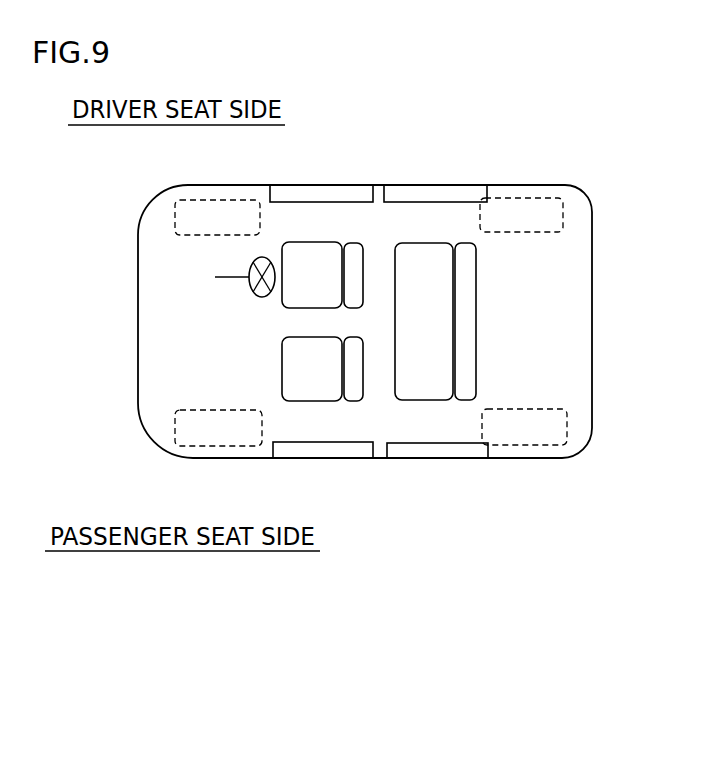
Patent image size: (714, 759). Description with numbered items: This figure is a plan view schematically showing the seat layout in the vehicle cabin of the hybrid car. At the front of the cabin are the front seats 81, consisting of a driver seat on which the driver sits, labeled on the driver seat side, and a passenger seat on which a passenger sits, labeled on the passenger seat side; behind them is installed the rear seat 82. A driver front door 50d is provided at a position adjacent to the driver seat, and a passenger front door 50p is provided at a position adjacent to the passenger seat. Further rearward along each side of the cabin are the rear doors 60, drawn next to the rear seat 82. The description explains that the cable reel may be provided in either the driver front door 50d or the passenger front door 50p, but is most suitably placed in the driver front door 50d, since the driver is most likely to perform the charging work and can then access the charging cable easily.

The driver front door 50d is at (354, 195).
The passenger front door 50p is at (357, 448).
The rear door 60 is at (432, 195).
The front seats 81 is at (302, 270).
The rear seat 82 is at (467, 322).